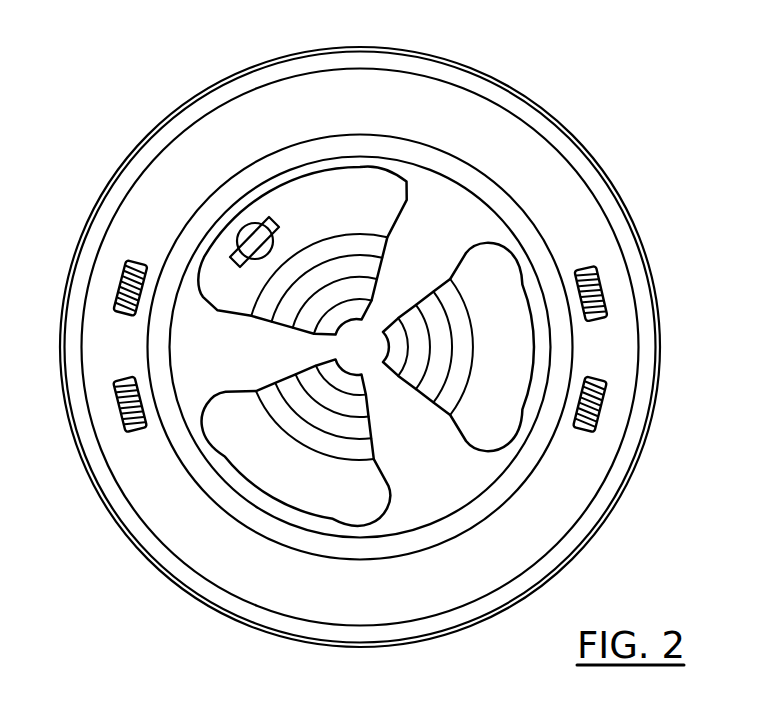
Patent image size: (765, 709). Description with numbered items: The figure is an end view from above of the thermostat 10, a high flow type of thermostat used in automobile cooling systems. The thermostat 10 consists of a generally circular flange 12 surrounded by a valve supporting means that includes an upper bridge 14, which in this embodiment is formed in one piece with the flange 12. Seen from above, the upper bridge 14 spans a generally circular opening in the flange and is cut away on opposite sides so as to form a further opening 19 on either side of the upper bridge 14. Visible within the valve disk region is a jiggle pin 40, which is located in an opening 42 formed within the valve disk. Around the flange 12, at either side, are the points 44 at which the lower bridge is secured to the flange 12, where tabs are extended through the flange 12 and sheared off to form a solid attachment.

The thermostat 10 is at (652, 530).
The flange 12 is at (557, 183).
The upper bridge 14 is at (195, 328).
The further opening 19 is at (233, 451).
The jiggle pin 40 is at (268, 226).
The opening 42 is at (242, 229).
The points 44 is at (125, 276).